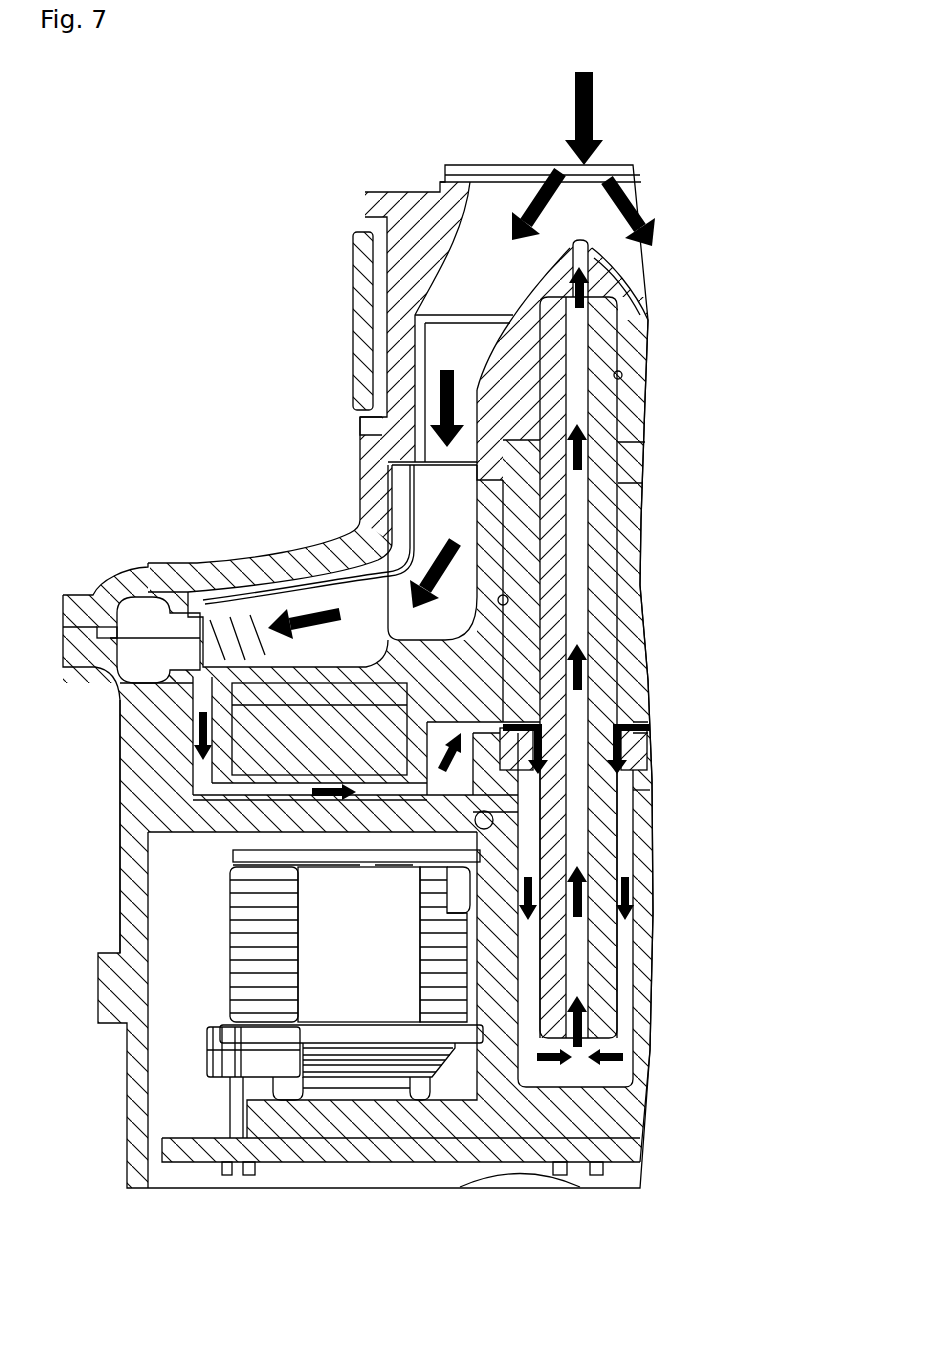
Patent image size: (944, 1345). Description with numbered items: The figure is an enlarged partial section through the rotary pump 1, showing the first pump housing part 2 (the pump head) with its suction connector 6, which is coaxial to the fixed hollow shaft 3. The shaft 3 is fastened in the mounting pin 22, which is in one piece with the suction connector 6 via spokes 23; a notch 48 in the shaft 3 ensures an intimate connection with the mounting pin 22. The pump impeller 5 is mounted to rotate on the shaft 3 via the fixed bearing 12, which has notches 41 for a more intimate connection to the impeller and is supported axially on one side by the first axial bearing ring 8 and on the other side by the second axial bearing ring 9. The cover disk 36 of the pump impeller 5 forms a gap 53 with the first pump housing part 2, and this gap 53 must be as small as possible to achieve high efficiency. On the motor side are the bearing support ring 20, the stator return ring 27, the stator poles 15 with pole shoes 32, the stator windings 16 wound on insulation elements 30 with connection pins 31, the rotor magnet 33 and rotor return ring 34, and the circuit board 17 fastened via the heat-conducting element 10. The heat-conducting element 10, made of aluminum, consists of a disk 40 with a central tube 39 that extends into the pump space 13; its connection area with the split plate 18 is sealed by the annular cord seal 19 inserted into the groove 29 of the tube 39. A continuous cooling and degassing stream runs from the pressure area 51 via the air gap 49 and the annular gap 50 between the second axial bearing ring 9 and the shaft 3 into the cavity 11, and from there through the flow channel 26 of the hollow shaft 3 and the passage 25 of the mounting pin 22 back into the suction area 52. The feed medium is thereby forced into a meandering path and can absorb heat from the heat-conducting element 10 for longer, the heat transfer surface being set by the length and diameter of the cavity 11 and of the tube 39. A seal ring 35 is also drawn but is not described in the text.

The rotary pump 1 is at (388, 104).
The first pump housing part 2 is at (285, 535).
The shaft 3 is at (605, 570).
The pump impeller 5 is at (470, 692).
The suction connector 6 is at (456, 174).
The first axial bearing ring 8 is at (628, 468).
The second axial bearing ring 9 is at (637, 762).
The heat-conducting element 10 is at (474, 1150).
The cavity 11 is at (528, 852).
The fixed bearing 12 is at (525, 630).
The pump space 13 is at (427, 756).
The stator poles 15 is at (330, 955).
The stator windings 16 is at (262, 910).
The circuit board 17 is at (532, 1150).
The split plate 18 is at (207, 831).
The annular cord seal 19 is at (494, 824).
The bearing support ring 20 is at (522, 800).
The mounting pin 22 is at (455, 328).
The spokes 23 is at (450, 353).
The passage 25 is at (583, 258).
The flow channel 26 is at (582, 508).
The stator return ring 27 is at (378, 1062).
The groove 29 is at (320, 843).
The insulation elements 30 is at (225, 1048).
The connection pins 31 is at (230, 1103).
The pole shoes 32 is at (300, 855).
The rotor magnet 33 is at (265, 735).
The rotor return ring 34 is at (265, 697).
The seal ring 35 is at (362, 278).
The cover disk 36 is at (355, 585).
The tube 39 is at (643, 962).
The disk 40 is at (343, 1120).
The notches 41 is at (508, 600).
The notch 48 is at (622, 375).
The air gap 49 is at (243, 792).
The annular gap 50 is at (628, 752).
The pressure area 51 is at (160, 648).
The suction area 52 is at (441, 186).
The gap 53 is at (333, 583).